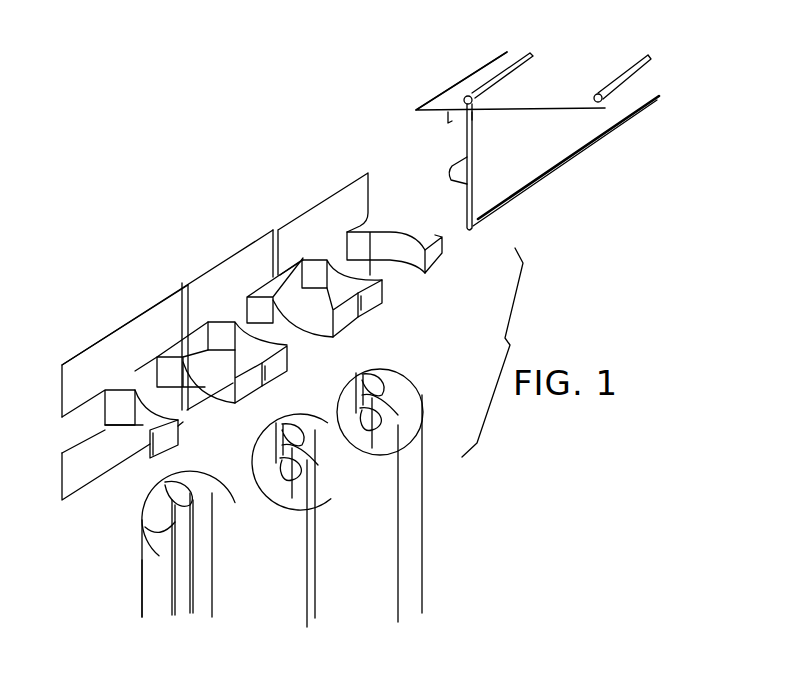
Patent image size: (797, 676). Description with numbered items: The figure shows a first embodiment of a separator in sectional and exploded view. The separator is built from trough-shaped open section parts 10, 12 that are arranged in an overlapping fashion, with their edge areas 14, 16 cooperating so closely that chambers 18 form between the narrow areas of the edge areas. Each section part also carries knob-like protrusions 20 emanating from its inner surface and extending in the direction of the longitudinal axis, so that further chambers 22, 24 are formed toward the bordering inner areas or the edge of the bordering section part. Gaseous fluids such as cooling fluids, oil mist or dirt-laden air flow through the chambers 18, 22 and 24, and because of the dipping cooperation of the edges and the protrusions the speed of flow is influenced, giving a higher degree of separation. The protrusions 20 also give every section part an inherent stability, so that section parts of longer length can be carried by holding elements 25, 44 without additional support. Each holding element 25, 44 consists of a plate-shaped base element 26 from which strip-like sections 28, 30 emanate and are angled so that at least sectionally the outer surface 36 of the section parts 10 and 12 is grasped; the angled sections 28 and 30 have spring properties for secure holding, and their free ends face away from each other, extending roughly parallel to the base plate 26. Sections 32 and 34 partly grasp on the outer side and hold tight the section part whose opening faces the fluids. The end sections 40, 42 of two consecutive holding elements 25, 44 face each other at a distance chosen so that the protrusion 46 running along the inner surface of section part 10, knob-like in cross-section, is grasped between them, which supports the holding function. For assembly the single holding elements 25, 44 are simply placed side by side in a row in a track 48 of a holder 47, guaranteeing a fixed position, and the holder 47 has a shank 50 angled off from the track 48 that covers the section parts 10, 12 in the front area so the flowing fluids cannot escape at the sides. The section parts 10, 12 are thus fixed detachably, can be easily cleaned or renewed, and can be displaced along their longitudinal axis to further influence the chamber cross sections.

The section part 10 is at (383, 508).
The section part 12 is at (405, 373).
The edge area 14 is at (377, 373).
The edge area 16 is at (357, 384).
The chamber 18 is at (396, 416).
The protrusion 20 is at (152, 517).
The chamber 22 is at (303, 490).
The chamber 24 is at (270, 517).
The holding element 25 is at (108, 350).
The base element 26 is at (143, 370).
The strip-like section 28 is at (122, 407).
The strip-like section 30 is at (218, 323).
The section 32 is at (133, 425).
The section 34 is at (198, 363).
The outer surface 36 is at (157, 563).
The end section 40 is at (247, 388).
The end section 42 is at (277, 366).
The holding element 44 is at (240, 268).
The protrusion 46 is at (263, 480).
The holder 47 is at (455, 67).
The track 48 is at (503, 177).
The shank 50 is at (557, 90).